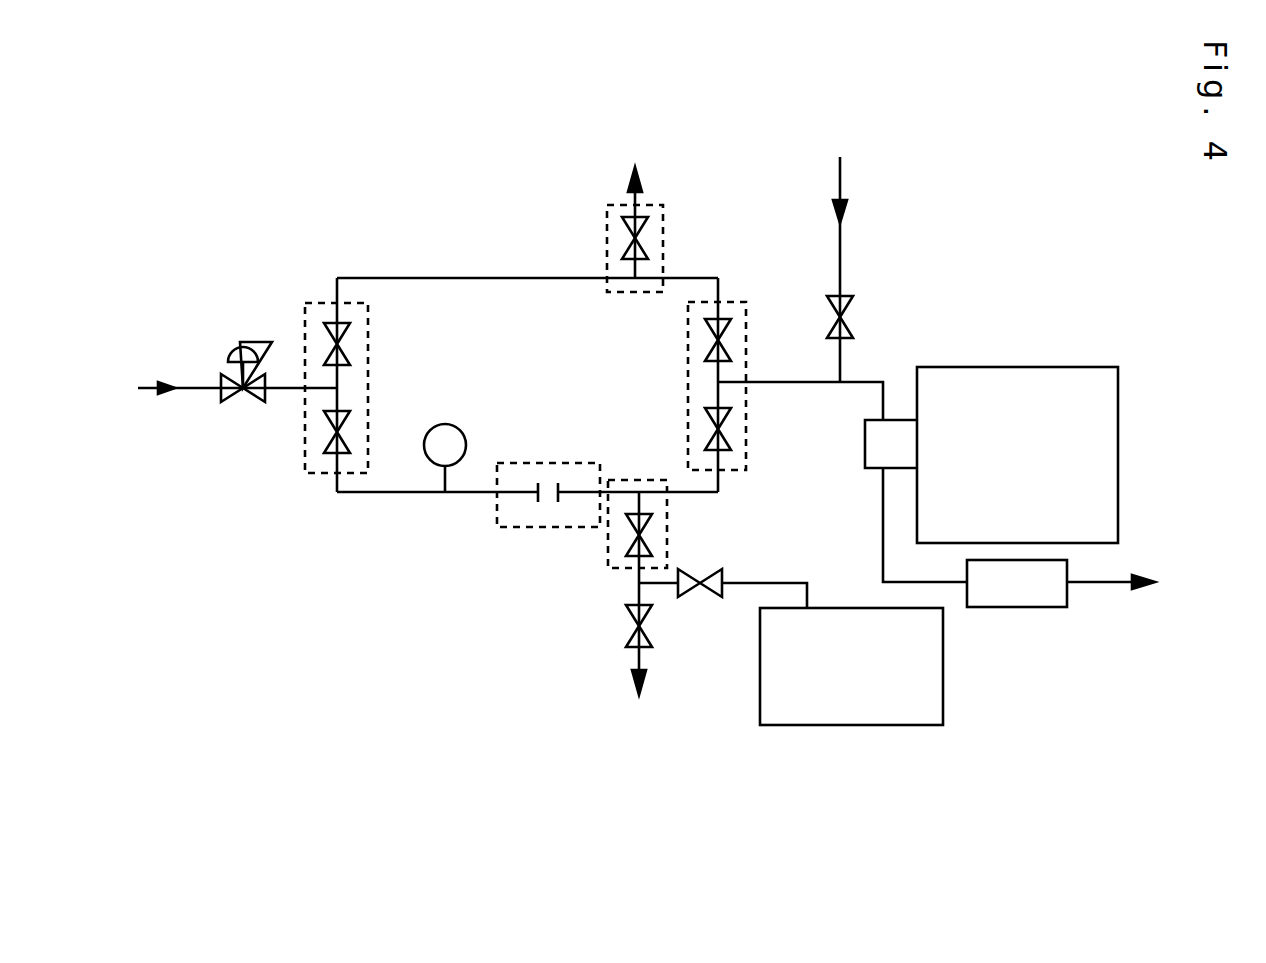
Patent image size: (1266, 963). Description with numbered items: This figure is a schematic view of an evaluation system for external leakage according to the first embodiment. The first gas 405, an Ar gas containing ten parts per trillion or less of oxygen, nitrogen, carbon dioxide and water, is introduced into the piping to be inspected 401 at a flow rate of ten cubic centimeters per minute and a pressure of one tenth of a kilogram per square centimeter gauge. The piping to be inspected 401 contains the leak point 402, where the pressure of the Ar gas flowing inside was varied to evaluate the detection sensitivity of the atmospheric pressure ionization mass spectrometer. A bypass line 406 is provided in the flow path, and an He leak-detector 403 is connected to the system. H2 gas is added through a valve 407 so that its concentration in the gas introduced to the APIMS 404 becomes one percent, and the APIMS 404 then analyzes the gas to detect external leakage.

The piping to be inspected 401 is at (410, 500).
The leak point 402 is at (543, 515).
The He leak-detector 403 is at (828, 713).
The APIMS 404 is at (990, 378).
The first gas 405 is at (214, 351).
The bypass line 406 is at (360, 278).
The valve 407 is at (855, 312).